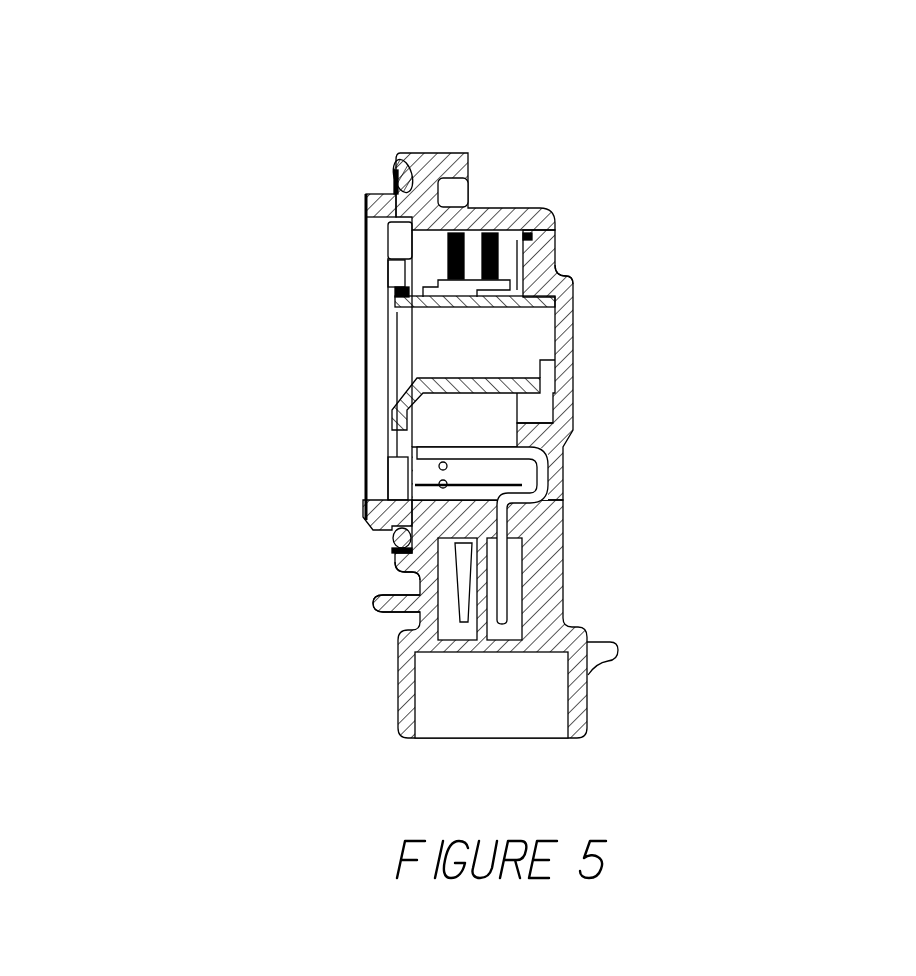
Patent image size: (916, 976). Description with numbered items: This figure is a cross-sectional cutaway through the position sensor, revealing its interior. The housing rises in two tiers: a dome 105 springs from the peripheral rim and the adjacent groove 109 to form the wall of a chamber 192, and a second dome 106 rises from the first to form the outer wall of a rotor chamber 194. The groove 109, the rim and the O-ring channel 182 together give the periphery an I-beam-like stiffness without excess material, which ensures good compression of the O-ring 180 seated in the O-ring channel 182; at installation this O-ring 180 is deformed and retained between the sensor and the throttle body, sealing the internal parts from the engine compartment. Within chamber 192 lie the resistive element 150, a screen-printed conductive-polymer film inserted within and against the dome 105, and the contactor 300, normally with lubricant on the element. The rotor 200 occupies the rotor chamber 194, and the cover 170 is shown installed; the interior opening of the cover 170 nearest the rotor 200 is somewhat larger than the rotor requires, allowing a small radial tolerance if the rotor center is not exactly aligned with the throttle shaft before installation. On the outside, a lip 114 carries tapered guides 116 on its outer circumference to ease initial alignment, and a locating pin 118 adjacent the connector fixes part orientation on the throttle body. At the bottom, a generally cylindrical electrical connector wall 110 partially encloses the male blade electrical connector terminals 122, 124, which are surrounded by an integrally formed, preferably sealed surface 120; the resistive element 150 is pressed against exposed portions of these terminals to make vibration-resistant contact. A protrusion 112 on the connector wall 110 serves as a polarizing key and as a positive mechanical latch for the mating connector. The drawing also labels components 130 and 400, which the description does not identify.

The dome 105 is at (838, 154).
The second dome 106 is at (849, 412).
The groove 109 is at (672, 118).
The electrical connector wall 110 is at (574, 777).
The protrusion 112 is at (773, 747).
The lip 114 is at (137, 170).
The tapered guides 116 is at (229, 132).
The locating pin 118 is at (284, 744).
The surface 120 is at (746, 606).
The electrical connector terminal 122 is at (865, 507).
The electrical connector terminal 124 is at (210, 707).
The bracket 130 is at (244, 457).
The resistive element 150 is at (693, 187).
The cover 170 is at (232, 201).
The O-ring 180 is at (68, 64).
The O-ring channel 182 is at (212, 24).
The chamber 192 is at (868, 340).
The chamber 194 is at (763, 457).
The rotor 200 is at (767, 347).
The contactor 300 is at (756, 261).
The wire clip 400 is at (874, 567).